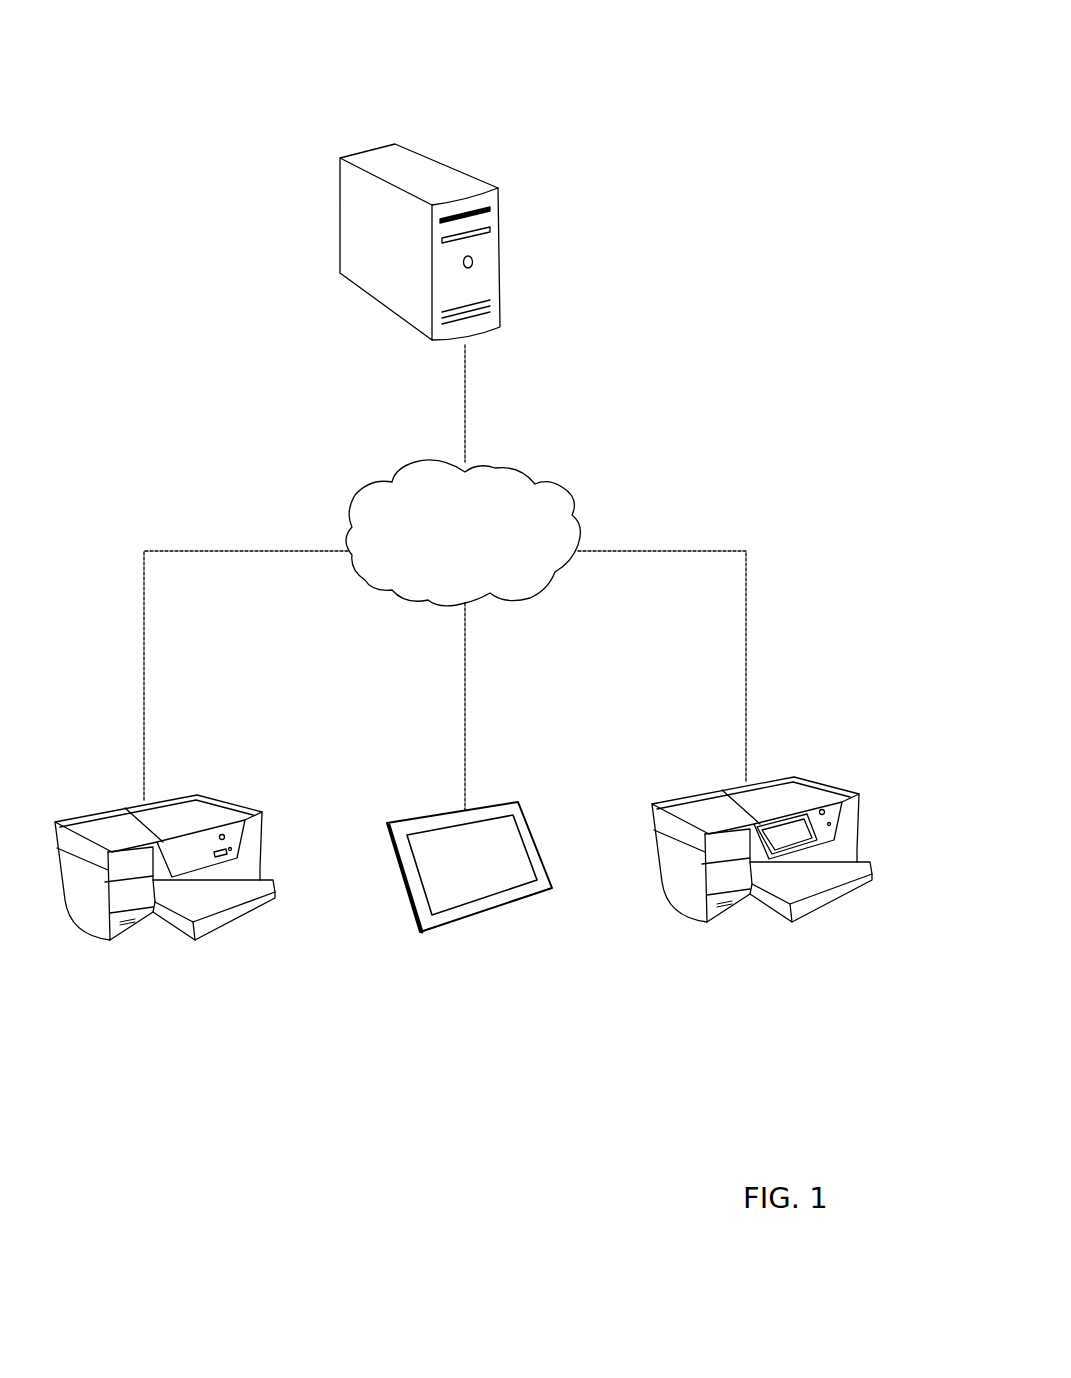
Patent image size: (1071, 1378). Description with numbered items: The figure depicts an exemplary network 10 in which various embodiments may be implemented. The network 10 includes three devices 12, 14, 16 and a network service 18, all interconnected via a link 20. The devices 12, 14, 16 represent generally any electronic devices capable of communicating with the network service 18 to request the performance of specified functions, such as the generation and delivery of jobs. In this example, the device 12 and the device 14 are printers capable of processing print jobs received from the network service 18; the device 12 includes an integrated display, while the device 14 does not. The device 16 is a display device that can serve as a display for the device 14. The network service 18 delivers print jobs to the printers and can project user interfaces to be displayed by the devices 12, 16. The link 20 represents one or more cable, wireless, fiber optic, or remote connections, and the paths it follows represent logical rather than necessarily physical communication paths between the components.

The network 10 is at (462, 58).
The device 12 is at (848, 805).
The device 14 is at (253, 825).
The device 16 is at (527, 818).
The network service 18 is at (437, 172).
The link 20 is at (482, 470).